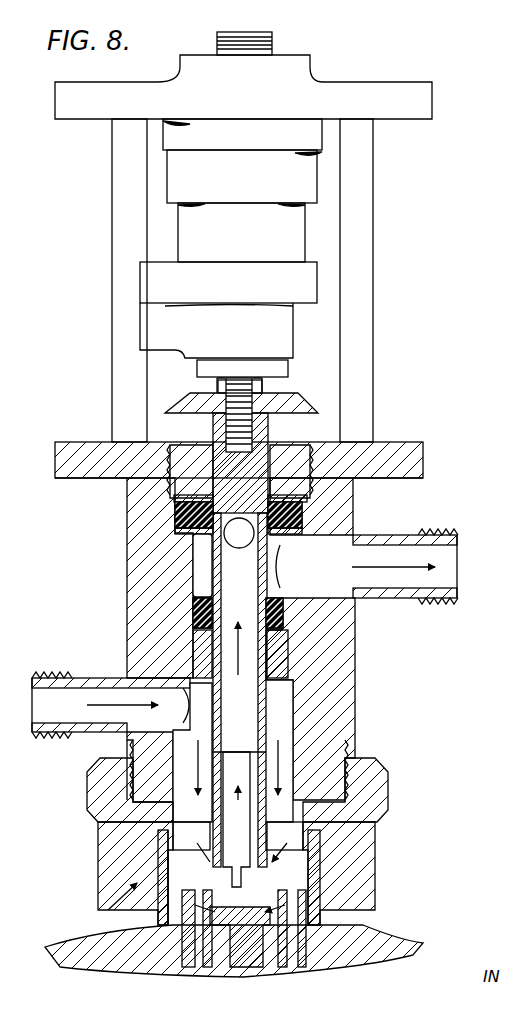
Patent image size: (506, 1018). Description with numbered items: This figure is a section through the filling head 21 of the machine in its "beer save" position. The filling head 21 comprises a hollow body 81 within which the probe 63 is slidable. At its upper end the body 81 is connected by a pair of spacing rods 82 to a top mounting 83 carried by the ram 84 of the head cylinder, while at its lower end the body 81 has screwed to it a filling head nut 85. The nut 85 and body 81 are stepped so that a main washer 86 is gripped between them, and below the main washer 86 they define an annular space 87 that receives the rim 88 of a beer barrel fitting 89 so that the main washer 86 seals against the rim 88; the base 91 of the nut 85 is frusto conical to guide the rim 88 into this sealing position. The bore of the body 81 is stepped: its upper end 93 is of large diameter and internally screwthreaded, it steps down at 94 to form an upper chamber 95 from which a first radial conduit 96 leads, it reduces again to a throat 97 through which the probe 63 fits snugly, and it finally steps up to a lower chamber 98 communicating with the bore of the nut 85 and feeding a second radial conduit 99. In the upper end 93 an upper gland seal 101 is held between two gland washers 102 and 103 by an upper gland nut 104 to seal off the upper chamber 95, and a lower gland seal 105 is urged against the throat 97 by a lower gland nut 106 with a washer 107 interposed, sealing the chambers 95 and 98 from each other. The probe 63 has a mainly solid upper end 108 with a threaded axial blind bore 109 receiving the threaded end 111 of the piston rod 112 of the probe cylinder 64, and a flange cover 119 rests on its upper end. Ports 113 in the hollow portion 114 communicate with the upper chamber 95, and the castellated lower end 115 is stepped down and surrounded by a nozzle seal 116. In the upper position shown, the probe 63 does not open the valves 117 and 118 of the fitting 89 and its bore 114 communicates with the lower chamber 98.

The filling head 21 is at (340, 668).
The probe 63 is at (288, 645).
The probe cylinder 64 is at (287, 235).
The hollow body 81 is at (135, 597).
The spacing rods 82 is at (355, 263).
The top mounting 83 is at (315, 98).
The ram 84 is at (272, 43).
The filling head nut 85 is at (322, 847).
The main washer 86 is at (350, 768).
The annular space 87 is at (333, 874).
The rim 88 is at (160, 842).
The beer barrel fitting 89 is at (175, 952).
The base 91 is at (172, 952).
The upper end 93 is at (176, 513).
The step 94 is at (300, 520).
The upper chamber 95 is at (194, 553).
The first radial conduit 96 is at (367, 552).
The throat 97 is at (228, 590).
The lower chamber 98 is at (275, 695).
The second radial conduit 99 is at (75, 700).
The upper gland seal 101 is at (305, 506).
The gland washer 102 is at (170, 523).
The gland washer 103 is at (175, 499).
The upper gland nut 104 is at (196, 452).
The lower gland seal 105 is at (200, 611).
The lower gland nut 106 is at (168, 698).
The washer 107 is at (285, 641).
The upper end 108 is at (216, 410).
The threaded axial blind bore 109 is at (250, 460).
The threaded end 111 is at (262, 407).
The piston rod 112 is at (232, 378).
The ports 113 is at (258, 577).
The hollow portion 114 is at (185, 728).
The lower end 115 is at (312, 898).
The nozzle seal 116 is at (365, 838).
The valve 117 is at (150, 858).
The valve 118 is at (285, 968).
The flange cover 119 is at (296, 402).